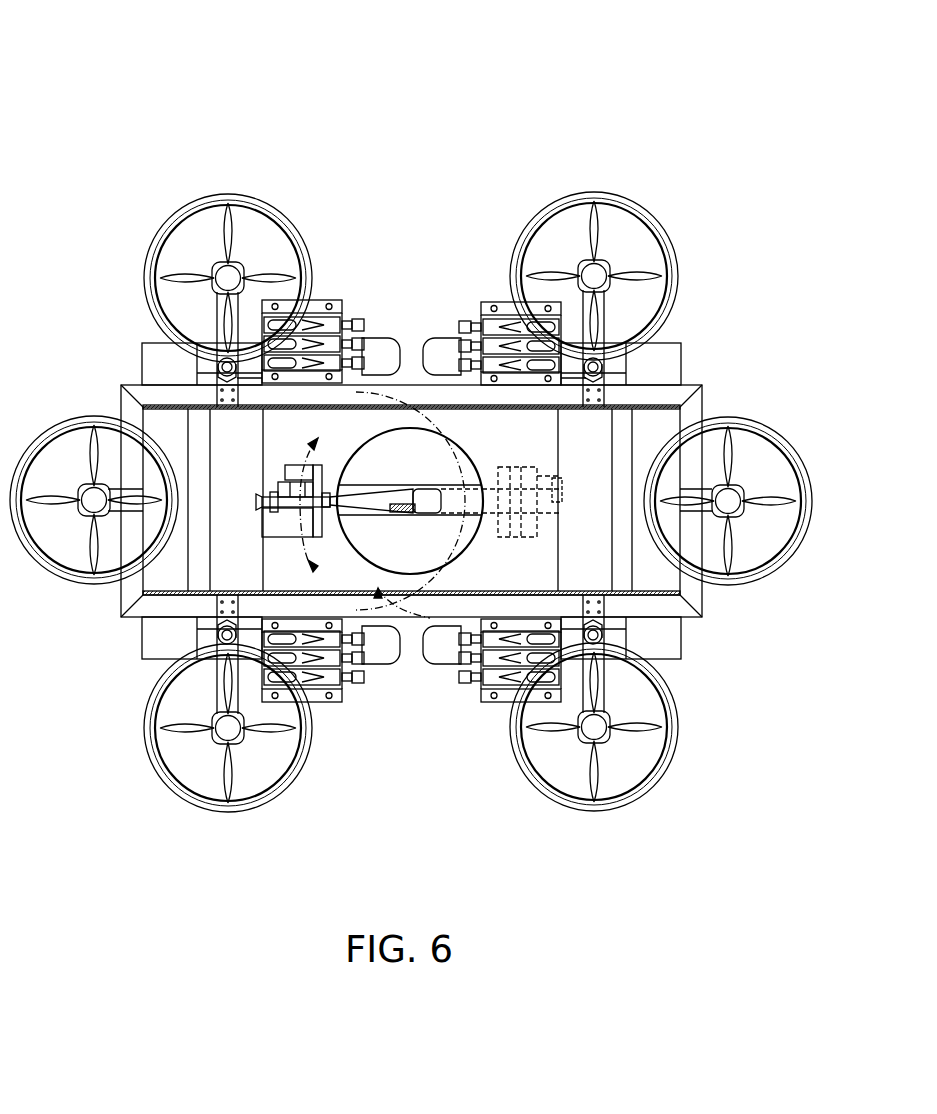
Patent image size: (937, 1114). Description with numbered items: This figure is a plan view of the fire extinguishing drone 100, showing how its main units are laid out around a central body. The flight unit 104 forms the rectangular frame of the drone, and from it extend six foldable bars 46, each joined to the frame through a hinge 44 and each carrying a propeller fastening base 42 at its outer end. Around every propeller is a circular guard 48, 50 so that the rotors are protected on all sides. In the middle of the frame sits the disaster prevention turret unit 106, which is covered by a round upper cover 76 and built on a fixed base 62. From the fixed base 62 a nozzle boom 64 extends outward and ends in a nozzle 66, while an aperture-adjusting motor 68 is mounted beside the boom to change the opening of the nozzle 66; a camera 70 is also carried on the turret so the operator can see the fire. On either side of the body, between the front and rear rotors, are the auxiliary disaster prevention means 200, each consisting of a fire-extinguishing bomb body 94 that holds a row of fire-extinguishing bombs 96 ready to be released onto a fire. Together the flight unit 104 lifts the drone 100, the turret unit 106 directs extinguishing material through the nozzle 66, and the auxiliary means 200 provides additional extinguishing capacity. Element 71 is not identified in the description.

The fire extinguishing drone 100 is at (537, 103).
The flight unit 104 is at (704, 618).
The disaster prevention turret unit 106 is at (377, 600).
The propeller fastening base 42 is at (222, 375).
The hinge 44 is at (603, 368).
The foldable bar 46 is at (216, 300).
The guard 48 is at (233, 225).
The guard 50 is at (205, 200).
The fixed base 62 is at (290, 540).
The nozzle boom 64 is at (368, 402).
The nozzle 66 is at (262, 502).
The aperture-adjusting motor 68 is at (280, 488).
The camera 70 is at (268, 522).
The motor housing 71 is at (285, 470).
The upper cover 76 is at (411, 430).
The fire-extinguishing bomb body 94 is at (322, 302).
The fire-extinguishing bomb 96 is at (292, 302).
The auxiliary disaster prevention means 200 is at (411, 501).